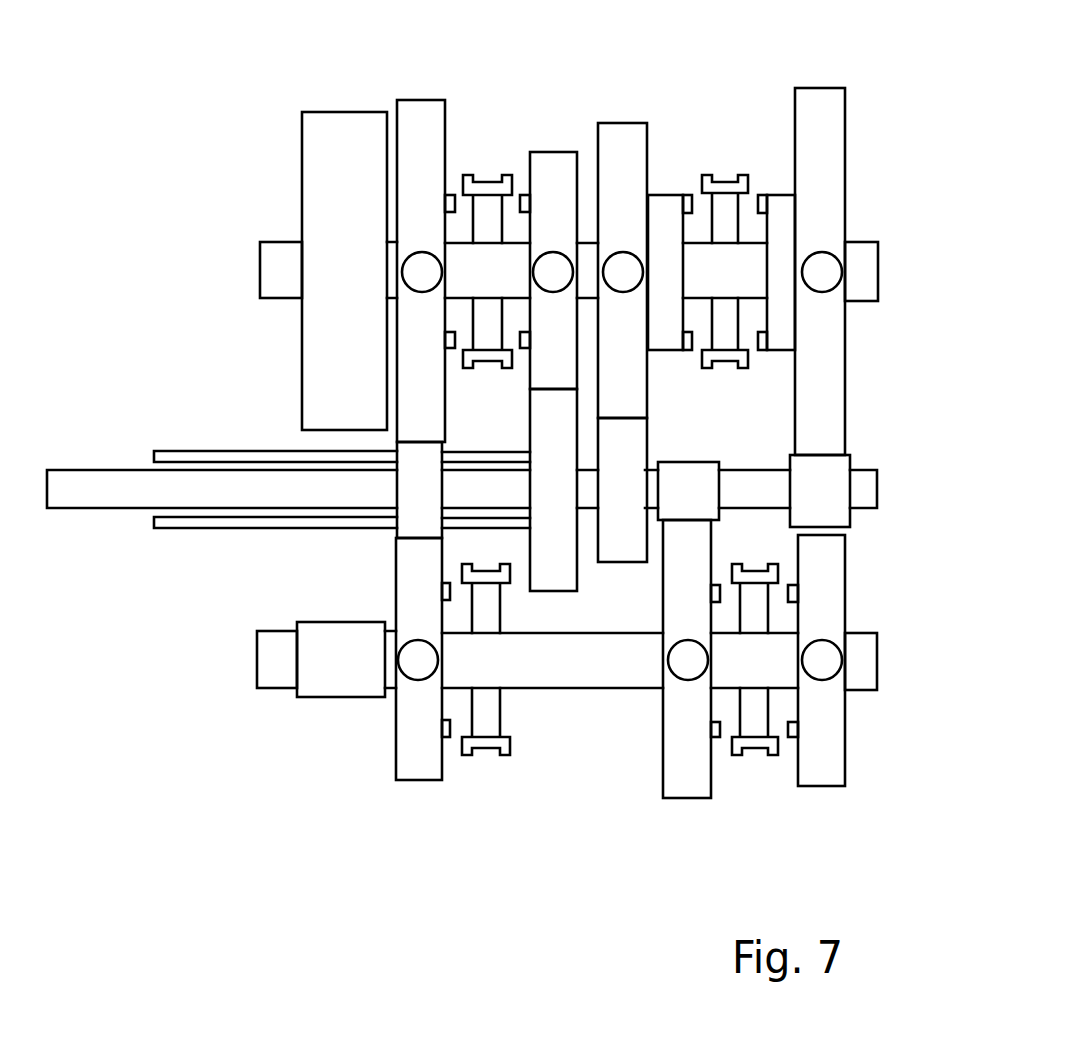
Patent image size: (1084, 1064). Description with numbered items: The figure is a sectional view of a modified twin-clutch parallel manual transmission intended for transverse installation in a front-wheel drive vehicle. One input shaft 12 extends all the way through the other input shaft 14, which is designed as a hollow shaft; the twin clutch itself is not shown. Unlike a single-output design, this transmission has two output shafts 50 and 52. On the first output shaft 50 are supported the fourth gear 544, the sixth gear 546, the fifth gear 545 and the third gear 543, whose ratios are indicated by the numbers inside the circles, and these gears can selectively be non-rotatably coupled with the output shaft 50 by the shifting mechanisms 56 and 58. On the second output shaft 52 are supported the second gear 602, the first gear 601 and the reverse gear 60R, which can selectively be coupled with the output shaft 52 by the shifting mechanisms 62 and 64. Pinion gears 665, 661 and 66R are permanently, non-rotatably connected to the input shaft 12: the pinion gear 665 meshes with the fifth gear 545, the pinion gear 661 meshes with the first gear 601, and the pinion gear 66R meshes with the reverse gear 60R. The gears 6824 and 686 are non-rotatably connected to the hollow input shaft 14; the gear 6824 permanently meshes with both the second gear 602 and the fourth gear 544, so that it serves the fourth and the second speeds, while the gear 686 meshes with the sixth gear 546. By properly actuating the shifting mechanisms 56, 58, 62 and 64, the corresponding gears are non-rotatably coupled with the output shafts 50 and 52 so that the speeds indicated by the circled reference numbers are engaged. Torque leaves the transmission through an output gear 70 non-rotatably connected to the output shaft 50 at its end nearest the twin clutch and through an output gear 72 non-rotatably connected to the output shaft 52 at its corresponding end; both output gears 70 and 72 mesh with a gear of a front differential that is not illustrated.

The output gear 70 is at (317, 182).
The gear 544 is at (423, 112).
The gear 546 is at (552, 162).
The gear 545 is at (625, 137).
The gear 543 is at (820, 102).
The output shaft 50 is at (868, 275).
The shifting mechanism 56 is at (490, 343).
The shifting mechanism 58 is at (727, 343).
The input shaft 12 is at (867, 490).
The input shaft 14 is at (192, 522).
The gear 6824 is at (420, 527).
The gear 686 is at (565, 574).
The gear 665 is at (620, 547).
The gear 661 is at (700, 510).
The gear 66R is at (838, 519).
The gear 602 is at (417, 767).
The gear 601 is at (687, 785).
The gear 60R is at (818, 770).
The shifting mechanism 62 is at (483, 727).
The shifting mechanism 64 is at (753, 728).
The output gear 72 is at (338, 683).
The output shaft 52 is at (867, 667).